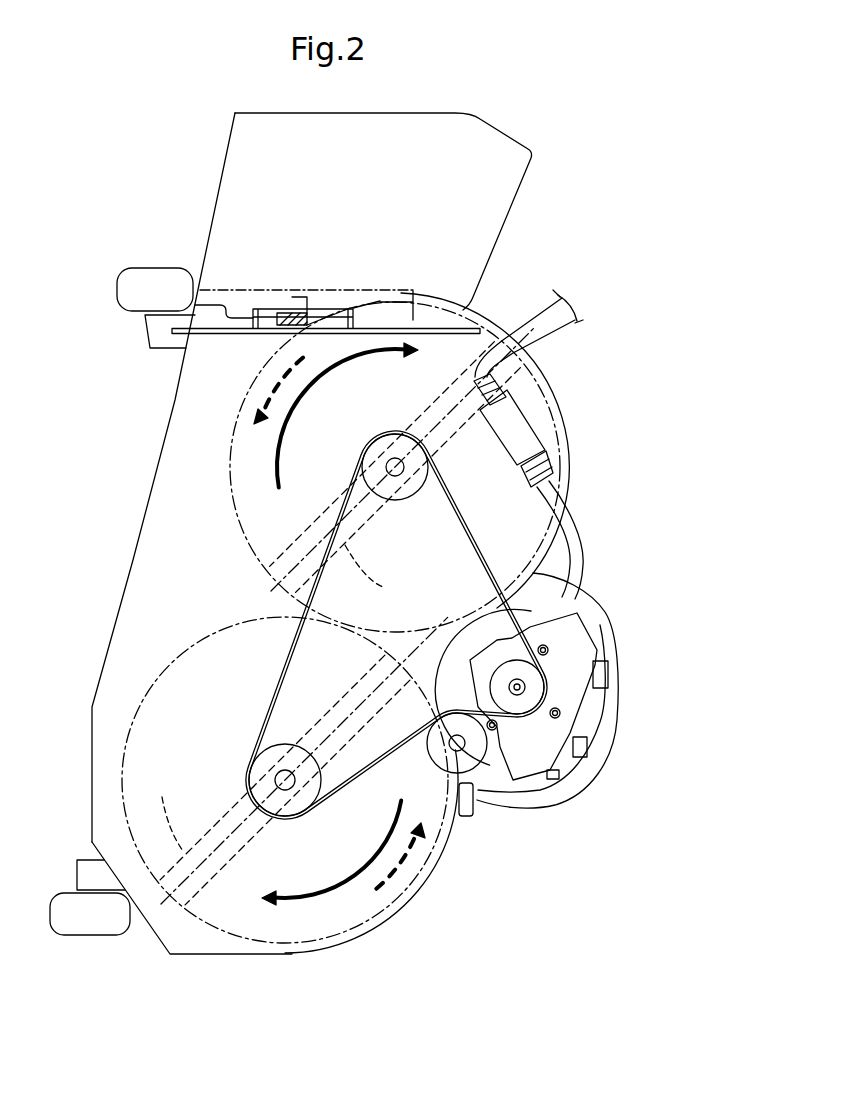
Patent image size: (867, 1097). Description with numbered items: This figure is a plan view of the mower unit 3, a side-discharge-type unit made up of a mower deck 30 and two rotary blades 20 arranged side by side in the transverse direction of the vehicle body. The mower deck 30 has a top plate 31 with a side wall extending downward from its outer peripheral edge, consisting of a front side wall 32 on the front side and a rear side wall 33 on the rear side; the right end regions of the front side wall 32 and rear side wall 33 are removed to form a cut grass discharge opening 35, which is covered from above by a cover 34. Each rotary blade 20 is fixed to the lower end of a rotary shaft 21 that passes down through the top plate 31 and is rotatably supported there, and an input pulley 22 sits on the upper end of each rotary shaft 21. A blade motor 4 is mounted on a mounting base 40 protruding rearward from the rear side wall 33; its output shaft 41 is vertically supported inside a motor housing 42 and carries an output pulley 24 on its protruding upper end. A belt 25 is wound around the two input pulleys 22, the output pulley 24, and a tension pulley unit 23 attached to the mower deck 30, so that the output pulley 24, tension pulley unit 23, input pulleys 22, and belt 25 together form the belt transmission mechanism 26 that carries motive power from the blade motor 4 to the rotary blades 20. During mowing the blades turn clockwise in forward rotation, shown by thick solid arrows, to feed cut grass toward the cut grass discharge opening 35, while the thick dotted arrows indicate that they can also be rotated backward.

The mower unit 3 is at (116, 567).
The blade motor 4 is at (488, 640).
The rotary blade 20 is at (345, 546).
The rotary shaft 21 is at (397, 470).
The input pulley 22 is at (373, 436).
The tension pulley unit 23 is at (467, 762).
The output pulley 24 is at (542, 689).
The belt 25 is at (292, 648).
The belt transmission mechanism 26 is at (262, 592).
The mower deck 30 is at (140, 630).
The top plate 31 is at (193, 412).
The front side wall 32 is at (143, 498).
The rear side wall 33 is at (440, 868).
The cover 34 is at (243, 184).
The cut grass discharge opening 35 is at (334, 293).
The mounting base 40 is at (528, 803).
The output shaft 41 is at (524, 697).
The motor housing 42 is at (578, 634).